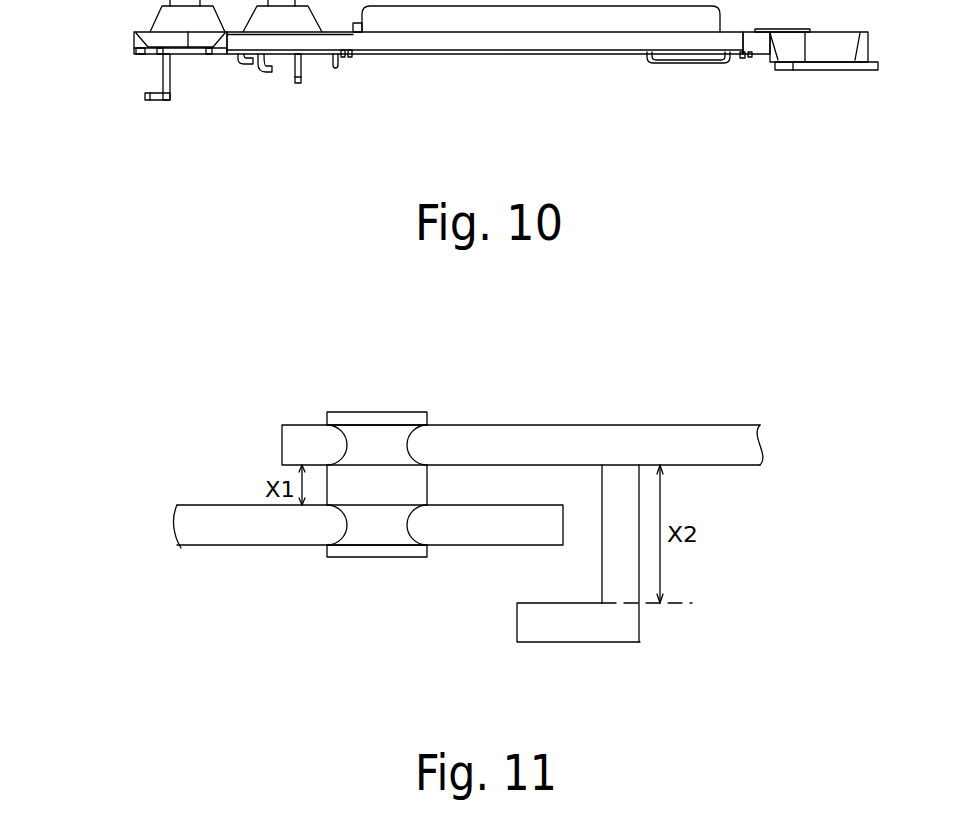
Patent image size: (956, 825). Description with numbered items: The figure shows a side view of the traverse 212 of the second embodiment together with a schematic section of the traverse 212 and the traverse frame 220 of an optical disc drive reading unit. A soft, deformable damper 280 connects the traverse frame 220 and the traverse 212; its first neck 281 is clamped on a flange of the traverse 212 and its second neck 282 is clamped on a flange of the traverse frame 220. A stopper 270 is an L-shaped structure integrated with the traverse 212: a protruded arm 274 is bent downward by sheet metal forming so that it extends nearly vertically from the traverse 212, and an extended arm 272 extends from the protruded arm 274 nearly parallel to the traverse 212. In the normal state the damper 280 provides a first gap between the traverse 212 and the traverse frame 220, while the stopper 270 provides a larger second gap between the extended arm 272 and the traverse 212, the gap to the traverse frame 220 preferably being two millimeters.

In FIG. 10, the traverse 212 is at (518, 55).
In FIG. 11, the traverse 212 is at (686, 425).
In FIG. 11, the traverse frame 220 is at (191, 503).
In FIG. 10, the stopper 270 is at (163, 61).
In FIG. 11, the stopper 270 is at (629, 535).
In FIG. 10, the extended arm 272 is at (158, 100).
In FIG. 11, the extended arm 272 is at (580, 634).
In FIG. 10, the protruded arm 274 is at (170, 77).
In FIG. 11, the protruded arm 274 is at (610, 513).
In FIG. 11, the damper 280 is at (374, 468).
In FIG. 11, the first neck 281 is at (343, 521).
In FIG. 11, the second neck 282 is at (407, 445).